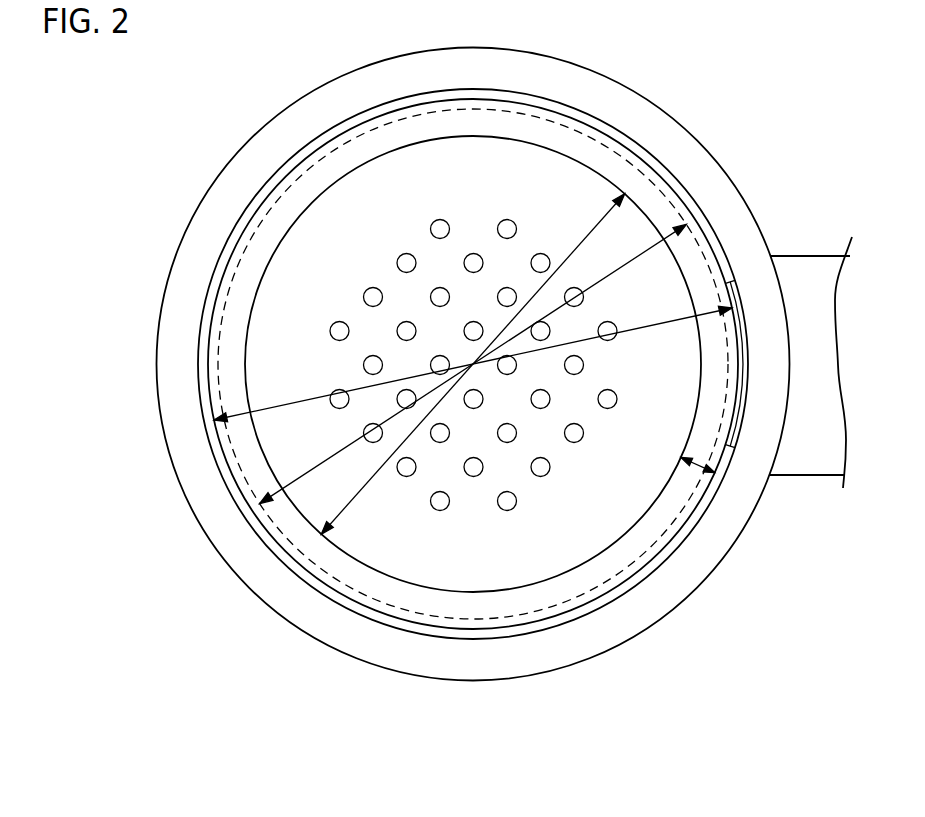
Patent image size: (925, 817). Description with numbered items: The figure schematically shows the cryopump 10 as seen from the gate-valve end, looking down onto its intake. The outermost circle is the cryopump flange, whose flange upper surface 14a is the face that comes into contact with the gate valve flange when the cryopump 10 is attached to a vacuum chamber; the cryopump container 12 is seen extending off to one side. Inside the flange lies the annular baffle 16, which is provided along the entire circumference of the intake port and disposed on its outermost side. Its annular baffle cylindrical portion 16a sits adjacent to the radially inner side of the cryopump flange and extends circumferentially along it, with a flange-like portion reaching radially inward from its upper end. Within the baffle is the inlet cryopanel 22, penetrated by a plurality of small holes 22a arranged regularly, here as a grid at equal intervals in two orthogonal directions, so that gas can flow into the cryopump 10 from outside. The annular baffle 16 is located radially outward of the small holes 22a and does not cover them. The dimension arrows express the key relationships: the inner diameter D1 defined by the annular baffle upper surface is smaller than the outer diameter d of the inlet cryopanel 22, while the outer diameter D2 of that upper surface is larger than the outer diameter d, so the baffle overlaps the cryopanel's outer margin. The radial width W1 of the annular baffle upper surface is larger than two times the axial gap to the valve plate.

The cryopump 10 is at (505, 417).
The cryopump container 12 is at (810, 255).
The flange upper surface 14a is at (733, 517).
The annular baffle 16 is at (683, 540).
The annular baffle cylindrical portion 16a is at (642, 543).
The inlet cryopanel 22 is at (542, 533).
The small holes 22a is at (508, 510).
The inner diameter D1 is at (587, 232).
The outer diameter d is at (630, 261).
The outer diameter D2 is at (663, 323).
The radial width W1 is at (700, 462).